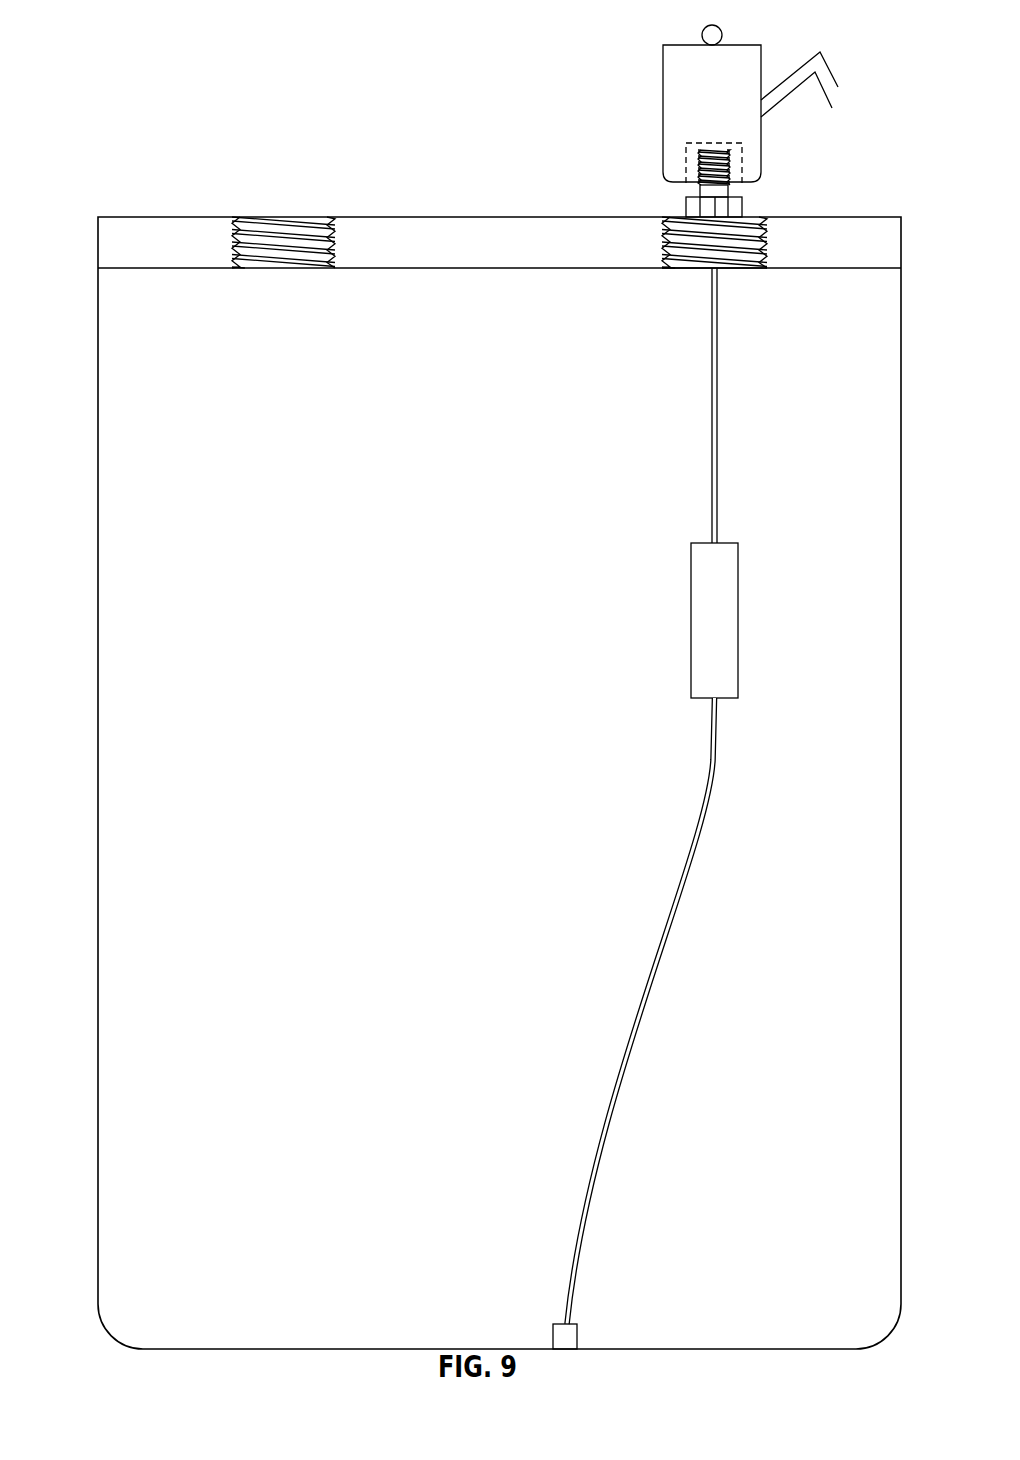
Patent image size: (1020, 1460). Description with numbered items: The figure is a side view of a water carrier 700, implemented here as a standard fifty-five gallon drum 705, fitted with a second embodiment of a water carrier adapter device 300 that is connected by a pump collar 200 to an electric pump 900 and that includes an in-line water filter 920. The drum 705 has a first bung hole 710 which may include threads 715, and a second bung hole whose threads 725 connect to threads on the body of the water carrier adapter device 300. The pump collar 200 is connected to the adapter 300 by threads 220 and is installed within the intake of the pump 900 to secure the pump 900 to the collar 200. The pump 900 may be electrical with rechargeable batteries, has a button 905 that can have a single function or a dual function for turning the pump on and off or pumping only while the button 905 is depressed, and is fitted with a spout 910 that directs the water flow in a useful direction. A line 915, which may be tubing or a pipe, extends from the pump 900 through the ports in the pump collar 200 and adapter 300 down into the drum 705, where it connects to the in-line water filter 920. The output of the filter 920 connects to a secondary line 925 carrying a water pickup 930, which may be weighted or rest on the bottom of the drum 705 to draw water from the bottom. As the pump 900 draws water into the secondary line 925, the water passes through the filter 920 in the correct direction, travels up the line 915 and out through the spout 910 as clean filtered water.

The water carrier 700 is at (135, 68).
The drum 705 is at (97, 350).
The first bung hole 710 is at (245, 217).
The threads 715 is at (300, 217).
The threads 220 is at (768, 227).
The threads 725 is at (692, 270).
The water carrier adapter device 300 is at (672, 216).
The pump collar 200 is at (732, 190).
The pump 900 is at (663, 55).
The button 905 is at (722, 32).
The spout 910 is at (832, 68).
The line 915 is at (718, 405).
The in-line water filter 920 is at (738, 618).
The secondary line 925 is at (658, 975).
The water pickup 930 is at (553, 1340).